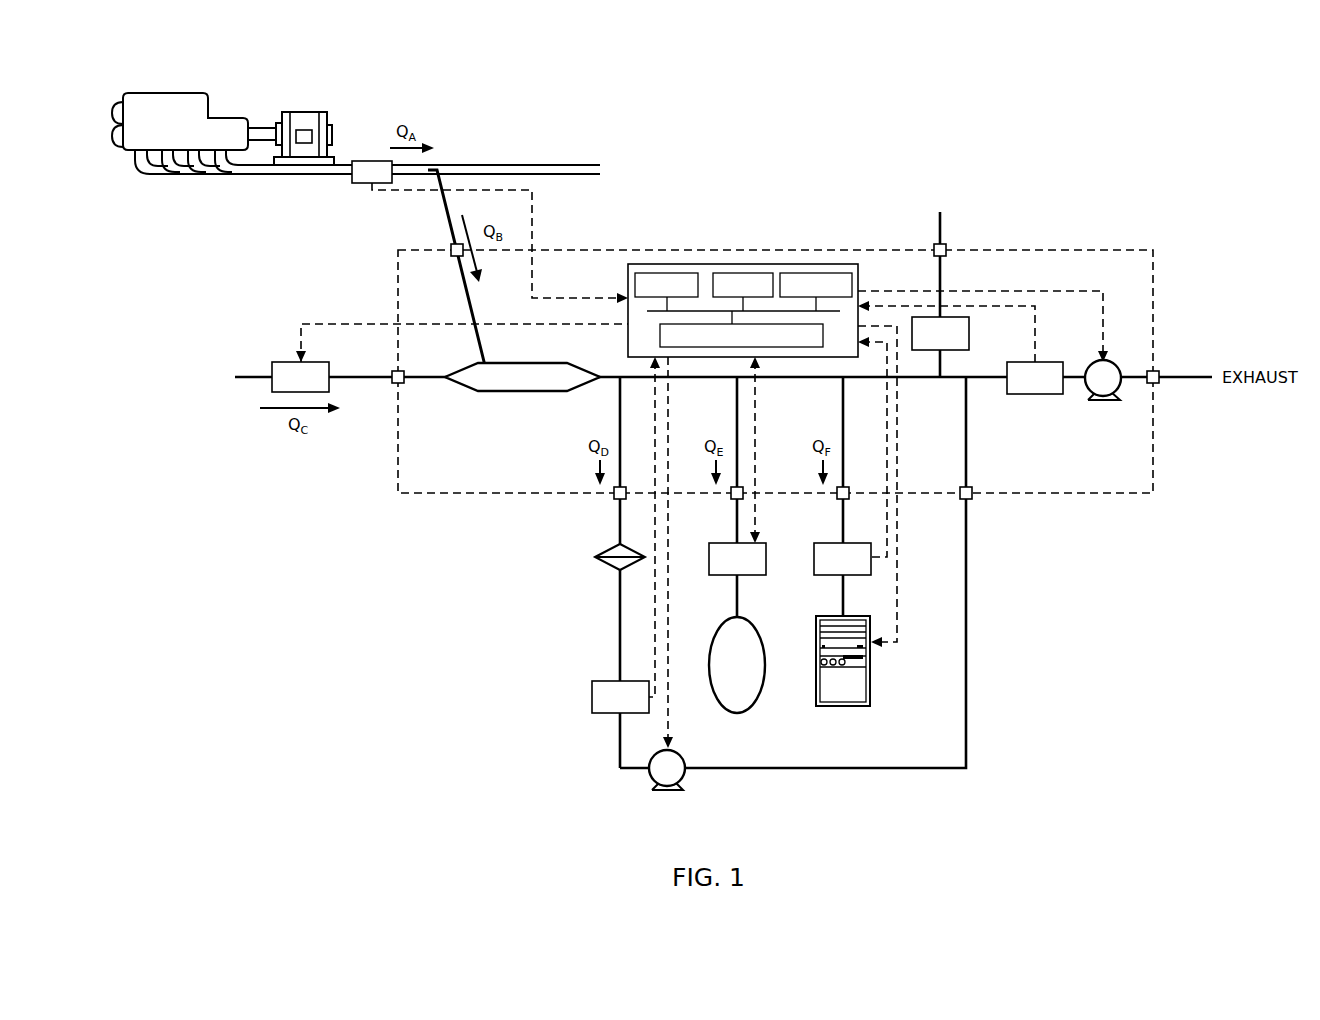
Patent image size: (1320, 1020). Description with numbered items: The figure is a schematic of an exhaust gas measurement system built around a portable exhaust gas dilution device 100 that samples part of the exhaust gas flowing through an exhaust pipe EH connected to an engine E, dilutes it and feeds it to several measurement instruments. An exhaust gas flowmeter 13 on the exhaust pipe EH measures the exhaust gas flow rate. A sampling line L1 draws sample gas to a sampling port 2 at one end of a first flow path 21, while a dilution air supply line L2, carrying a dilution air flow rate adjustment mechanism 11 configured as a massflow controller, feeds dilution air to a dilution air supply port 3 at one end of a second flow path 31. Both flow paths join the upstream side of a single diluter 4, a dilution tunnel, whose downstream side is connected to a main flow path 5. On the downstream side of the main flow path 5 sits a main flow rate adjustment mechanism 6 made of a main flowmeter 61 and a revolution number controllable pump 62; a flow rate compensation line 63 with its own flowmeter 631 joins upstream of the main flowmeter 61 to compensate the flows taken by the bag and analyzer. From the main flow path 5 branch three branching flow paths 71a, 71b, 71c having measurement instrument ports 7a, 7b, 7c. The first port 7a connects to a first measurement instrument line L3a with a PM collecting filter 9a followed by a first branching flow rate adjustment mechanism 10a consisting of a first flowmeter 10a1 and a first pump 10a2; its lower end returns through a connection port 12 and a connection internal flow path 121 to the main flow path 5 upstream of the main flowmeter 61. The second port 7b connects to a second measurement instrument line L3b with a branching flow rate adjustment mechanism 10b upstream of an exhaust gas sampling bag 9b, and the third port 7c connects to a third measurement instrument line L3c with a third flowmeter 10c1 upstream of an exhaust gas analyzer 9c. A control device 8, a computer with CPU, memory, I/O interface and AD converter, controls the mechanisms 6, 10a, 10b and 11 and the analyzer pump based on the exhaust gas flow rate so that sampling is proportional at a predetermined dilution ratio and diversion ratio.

The engine E is at (163, 93).
The exhaust pipe EH is at (470, 165).
The exhaust gas flowmeter 13 is at (373, 161).
The sampling line L1 is at (440, 222).
The sampling port 2 is at (453, 258).
The first flow path 21 is at (481, 335).
The dilution air flow rate adjustment mechanism 11 is at (280, 362).
The dilution air supply line L2 is at (367, 385).
The dilution air supply port 3 is at (406, 385).
The second flow path 31 is at (428, 381).
The diluter 4 is at (520, 393).
The first branching flow path 71a is at (617, 404).
The second branching flow path 71b is at (734, 404).
The third branching flow path 71c is at (840, 404).
The control device 8 is at (700, 264).
The exhaust gas dilution device 100 is at (866, 250).
The flow rate compensation line 63 is at (945, 270).
The flowmeter 631 is at (970, 333).
The main flowmeter 61 is at (1050, 362).
The pump 62 is at (1105, 400).
The main flow path 5 is at (920, 380).
The connection internal flow path 121 is at (968, 450).
The connection port 12 is at (970, 498).
The main flow rate adjustment mechanism 6 is at (1062, 458).
The first measurement instrument port 7a is at (613, 500).
The second measurement instrument port 7b is at (730, 500).
The third measurement instrument port 7c is at (836, 500).
The PM collecting filter 9a is at (595, 557).
The exhaust gas sampling bag 9b is at (757, 705).
The exhaust gas analyzer 9c is at (872, 682).
The first branching flow rate adjustment mechanism 10a is at (537, 808).
The first flowmeter 10a1 is at (591, 705).
The first pump 10a2 is at (650, 783).
The branching flow rate adjustment mechanism 10b is at (719, 577).
The third flowmeter 10c1 is at (873, 565).
The first measurement instrument line L3a is at (618, 614).
The second measurement instrument line L3b is at (740, 600).
The third measurement instrument line L3c is at (846, 595).